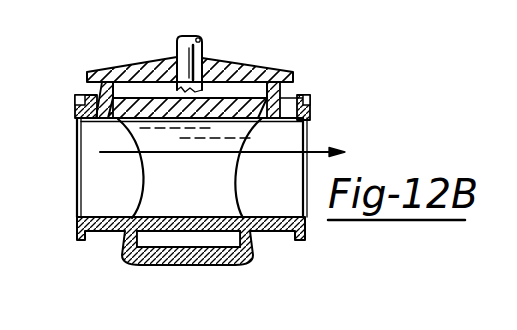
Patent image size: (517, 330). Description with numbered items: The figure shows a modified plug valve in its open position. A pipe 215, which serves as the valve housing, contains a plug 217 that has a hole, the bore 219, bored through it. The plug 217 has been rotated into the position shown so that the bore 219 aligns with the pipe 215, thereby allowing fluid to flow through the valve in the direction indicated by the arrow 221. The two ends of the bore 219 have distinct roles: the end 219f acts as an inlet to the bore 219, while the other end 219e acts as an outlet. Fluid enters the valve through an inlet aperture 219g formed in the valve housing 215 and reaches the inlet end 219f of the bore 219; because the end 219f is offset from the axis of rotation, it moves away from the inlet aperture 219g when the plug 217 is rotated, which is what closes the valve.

The pipe 215 is at (366, 61).
The plug 217 is at (190, 188).
The bore 219 is at (157, 218).
The end 219e is at (288, 183).
The end 219f is at (137, 163).
The inlet aperture 219g is at (73, 98).
The arrow 221 is at (315, 150).